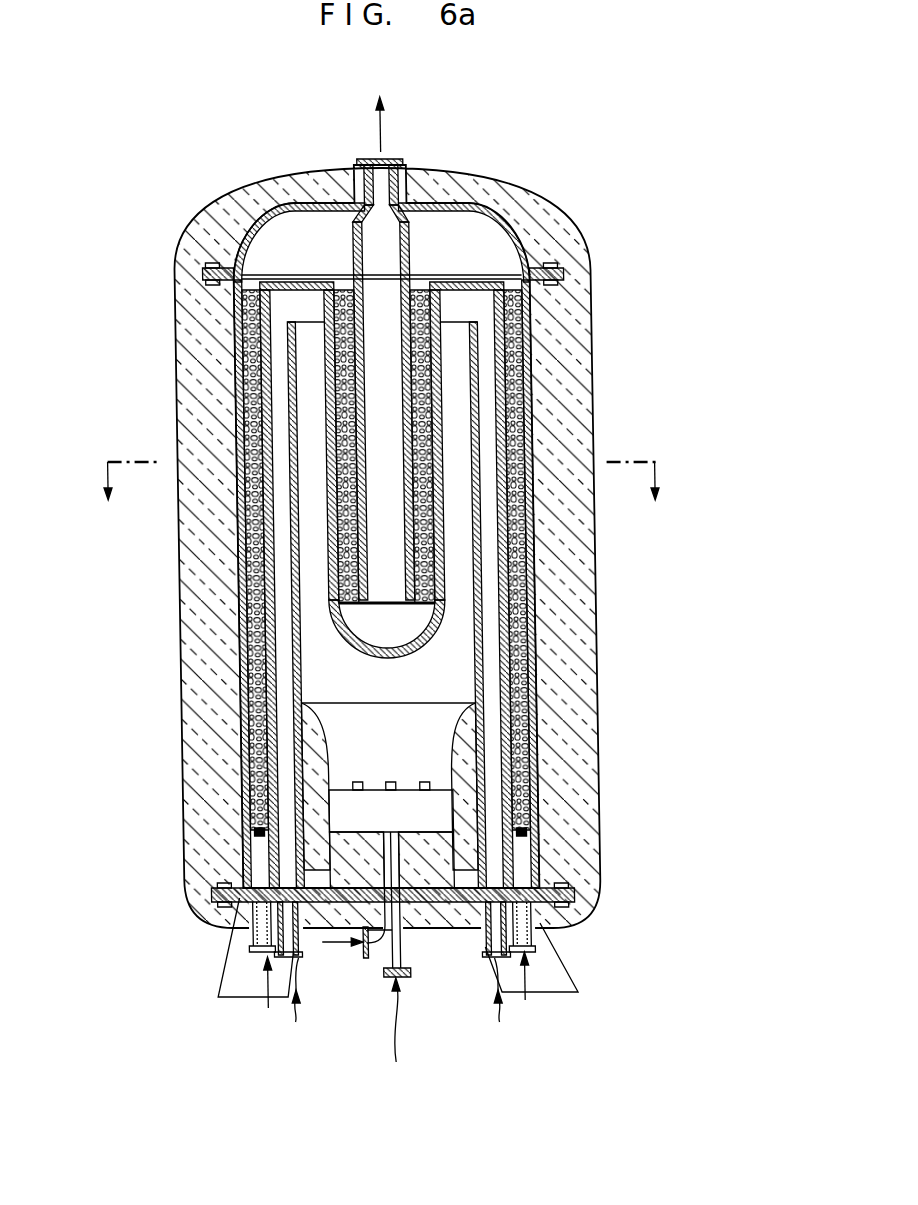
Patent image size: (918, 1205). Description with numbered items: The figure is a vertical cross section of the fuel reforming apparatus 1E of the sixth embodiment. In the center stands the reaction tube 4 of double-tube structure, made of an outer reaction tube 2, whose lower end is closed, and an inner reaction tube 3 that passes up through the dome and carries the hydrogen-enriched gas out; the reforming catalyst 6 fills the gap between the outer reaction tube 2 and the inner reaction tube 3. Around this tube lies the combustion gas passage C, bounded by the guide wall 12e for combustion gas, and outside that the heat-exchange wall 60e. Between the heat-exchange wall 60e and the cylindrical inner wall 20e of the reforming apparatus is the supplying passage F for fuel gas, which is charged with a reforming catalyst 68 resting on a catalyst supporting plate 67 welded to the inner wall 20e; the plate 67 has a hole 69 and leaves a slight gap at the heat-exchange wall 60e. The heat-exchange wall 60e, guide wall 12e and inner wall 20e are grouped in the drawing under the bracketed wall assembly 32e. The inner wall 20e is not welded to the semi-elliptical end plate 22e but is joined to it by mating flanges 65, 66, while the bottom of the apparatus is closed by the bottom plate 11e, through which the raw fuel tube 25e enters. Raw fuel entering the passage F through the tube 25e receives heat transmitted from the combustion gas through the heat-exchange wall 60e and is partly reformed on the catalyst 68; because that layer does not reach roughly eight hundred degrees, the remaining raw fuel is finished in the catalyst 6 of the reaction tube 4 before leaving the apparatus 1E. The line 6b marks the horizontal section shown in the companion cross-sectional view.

The fuel reforming apparatus 1E is at (592, 168).
The semi-elliptical end plate 22e is at (276, 202).
The flange 66 is at (207, 270).
The flange 65 is at (215, 286).
The reforming catalyst 6 is at (352, 297).
The inner reaction tube 3 is at (409, 225).
The outer reaction tube 2 is at (424, 286).
The reaction tube 4 is at (443, 212).
The combustion gas passage C is at (316, 378).
The heat-exchange wall 60e is at (270, 605).
The guide wall for combustion gas 12e is at (292, 637).
The inner wall of the reforming apparatus 20e is at (243, 680).
The heat exchange tube assembly 32e is at (125, 595).
The supplying passage for fuel gas F is at (252, 733).
The reforming catalyst 68 is at (529, 623).
The catalyst supporting plate 67 is at (524, 822).
The hole 69 is at (525, 838).
The bottom plate 11e is at (207, 900).
The raw fuel tube 25e is at (251, 933).
The sectional view line VIb-VIb 6b is at (384, 498).